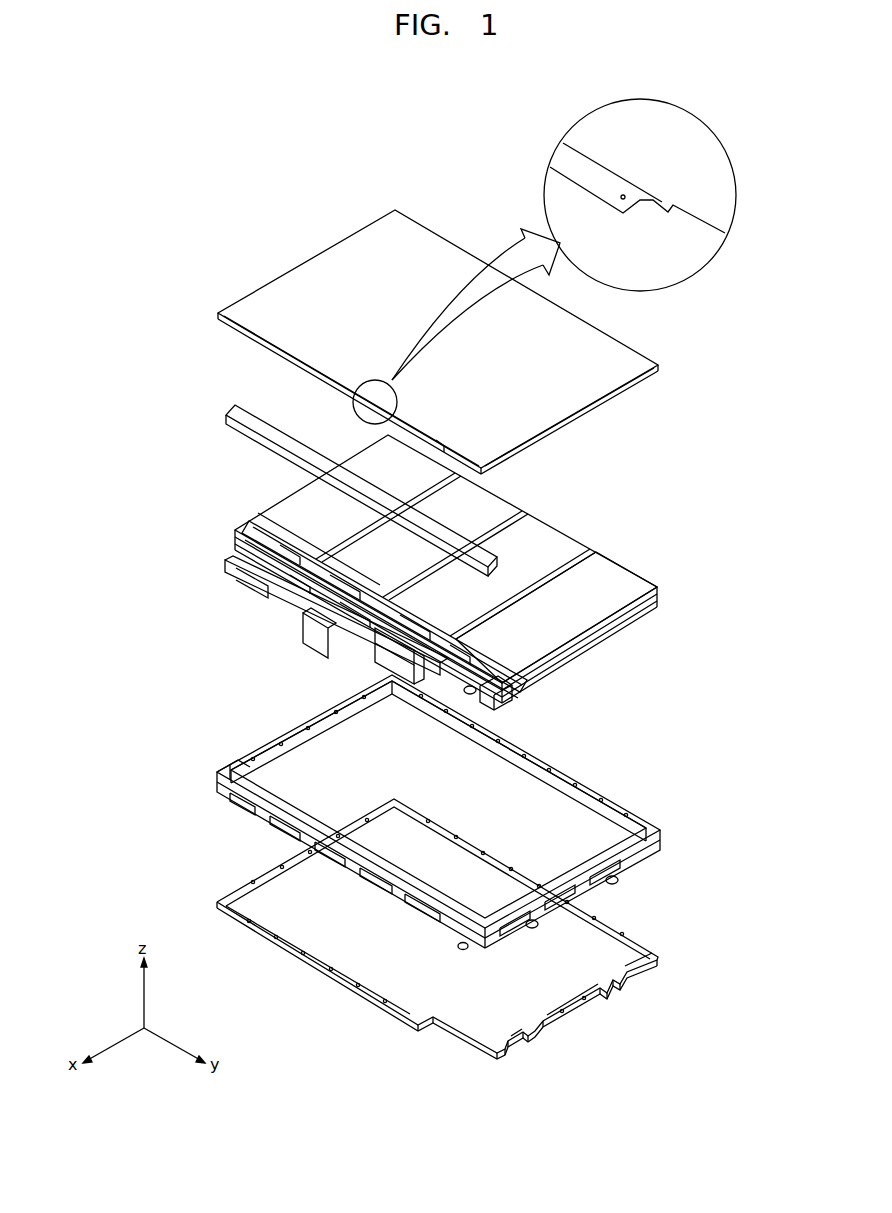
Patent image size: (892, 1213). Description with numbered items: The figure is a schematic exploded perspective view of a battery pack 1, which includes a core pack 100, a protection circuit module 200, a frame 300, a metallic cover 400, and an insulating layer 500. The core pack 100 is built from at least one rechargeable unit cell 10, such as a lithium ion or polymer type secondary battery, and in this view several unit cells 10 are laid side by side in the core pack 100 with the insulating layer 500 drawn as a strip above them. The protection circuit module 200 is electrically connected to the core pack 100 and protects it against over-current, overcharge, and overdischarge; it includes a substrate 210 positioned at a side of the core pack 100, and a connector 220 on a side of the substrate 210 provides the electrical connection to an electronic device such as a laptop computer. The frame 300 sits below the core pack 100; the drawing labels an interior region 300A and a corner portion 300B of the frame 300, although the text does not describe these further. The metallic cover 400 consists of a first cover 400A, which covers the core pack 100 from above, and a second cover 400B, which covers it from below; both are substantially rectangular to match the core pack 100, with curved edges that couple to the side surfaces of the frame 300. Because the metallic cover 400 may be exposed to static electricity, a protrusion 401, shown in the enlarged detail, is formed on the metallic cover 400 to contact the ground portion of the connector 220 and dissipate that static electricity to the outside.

The battery pack 1 is at (203, 214).
The unit cell 10 is at (626, 582).
The core pack 100 is at (252, 500).
The protection circuit module 200 is at (218, 531).
The substrate 210 is at (488, 690).
The connector 220 is at (334, 646).
The frame 300 is at (220, 771).
The accommodation space 300A is at (350, 768).
The frame corner 300B is at (226, 770).
The metallic cover 400 is at (742, 414).
The first cover 400A is at (660, 370).
The second cover 400B is at (636, 941).
The protrusion 401 is at (650, 203).
The insulating layer 500 is at (241, 414).